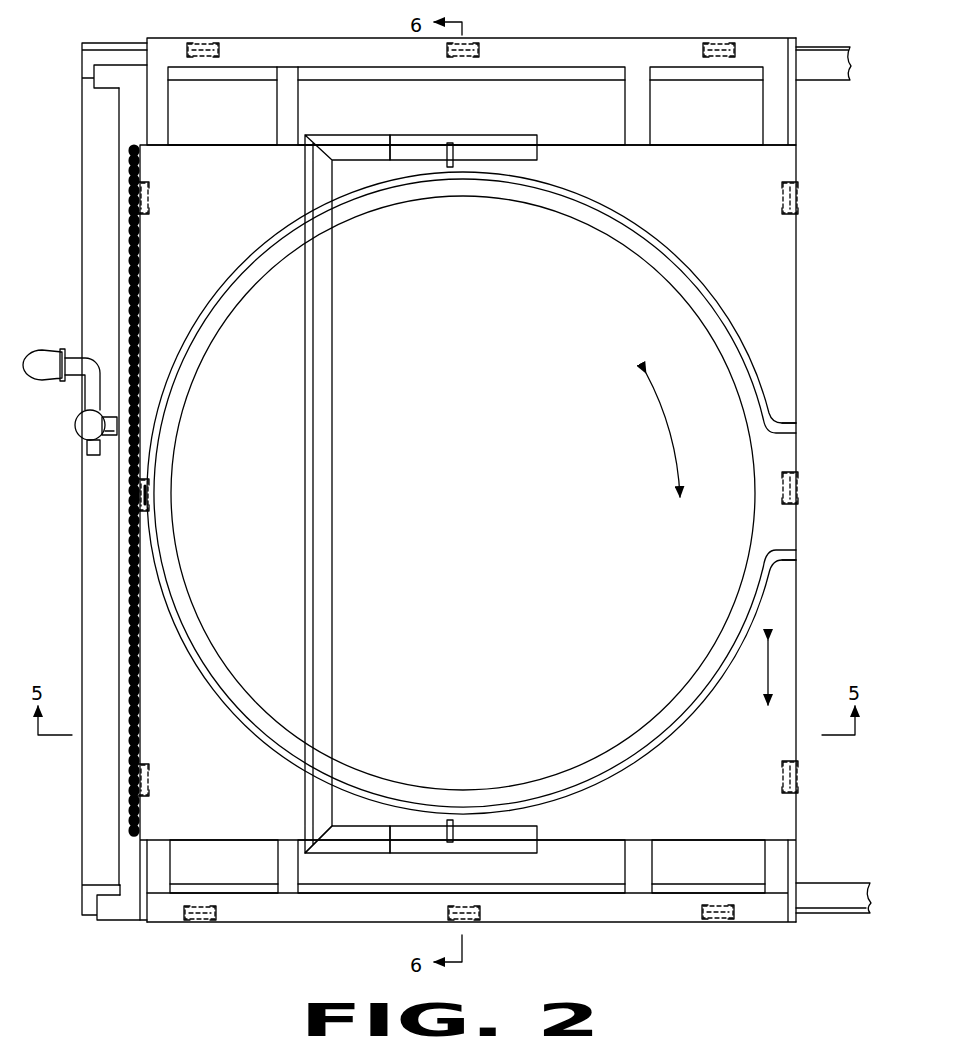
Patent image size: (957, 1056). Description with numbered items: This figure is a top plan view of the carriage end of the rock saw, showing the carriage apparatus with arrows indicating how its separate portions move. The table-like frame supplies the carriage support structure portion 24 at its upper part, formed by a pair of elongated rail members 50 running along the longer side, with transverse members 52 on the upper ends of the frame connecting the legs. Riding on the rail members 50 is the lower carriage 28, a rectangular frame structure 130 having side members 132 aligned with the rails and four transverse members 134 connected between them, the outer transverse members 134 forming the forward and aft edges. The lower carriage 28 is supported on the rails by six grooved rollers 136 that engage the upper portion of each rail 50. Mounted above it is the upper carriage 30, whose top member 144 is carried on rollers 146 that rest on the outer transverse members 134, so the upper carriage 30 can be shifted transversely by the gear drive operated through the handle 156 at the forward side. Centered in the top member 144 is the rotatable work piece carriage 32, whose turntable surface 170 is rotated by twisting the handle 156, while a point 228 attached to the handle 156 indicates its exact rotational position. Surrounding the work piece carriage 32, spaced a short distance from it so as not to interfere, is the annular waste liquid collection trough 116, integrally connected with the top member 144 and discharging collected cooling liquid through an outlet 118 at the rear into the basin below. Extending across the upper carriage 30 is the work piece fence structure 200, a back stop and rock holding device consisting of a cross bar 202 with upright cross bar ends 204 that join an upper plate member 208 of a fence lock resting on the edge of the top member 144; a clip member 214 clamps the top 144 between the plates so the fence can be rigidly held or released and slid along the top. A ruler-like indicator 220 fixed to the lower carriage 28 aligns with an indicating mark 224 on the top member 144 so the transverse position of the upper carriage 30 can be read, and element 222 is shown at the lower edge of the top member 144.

The carriage support structure portion 24 is at (70, 57).
The lower carriage 28 is at (292, 48).
The upper carriage 30 is at (222, 145).
The work piece carriage 32 is at (250, 283).
The rail members 50 is at (838, 26).
The transverse members 52 is at (92, 181).
The waste liquid collection trough 116 is at (718, 316).
The outlet 118 is at (786, 428).
The rectangular frame structure 130 is at (555, 38).
The side members 132 is at (333, 46).
The transverse members 134 is at (165, 103).
The rollers 136 is at (196, 42).
The top member 144 is at (796, 606).
The rollers 146 is at (152, 198).
The handle 156 is at (44, 352).
The turntable surface 170 is at (500, 398).
The work piece fence structure 200 is at (350, 547).
The cross bar 202 is at (335, 660).
The cross bar end 204 is at (357, 846).
The upper plate member 208 is at (512, 146).
The clip member 214 is at (450, 143).
The ruler-like indicator 220 is at (136, 722).
The plate lower edge 222 is at (135, 822).
The indicating mark 224 is at (150, 495).
The point 228 is at (108, 386).